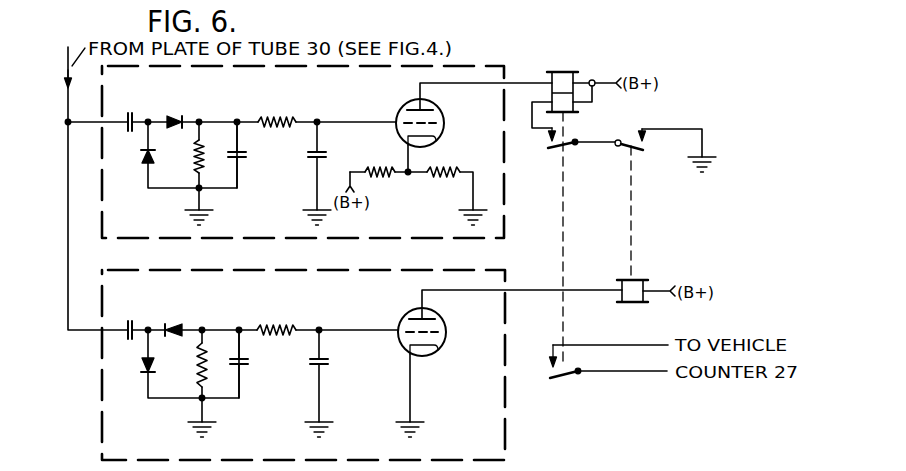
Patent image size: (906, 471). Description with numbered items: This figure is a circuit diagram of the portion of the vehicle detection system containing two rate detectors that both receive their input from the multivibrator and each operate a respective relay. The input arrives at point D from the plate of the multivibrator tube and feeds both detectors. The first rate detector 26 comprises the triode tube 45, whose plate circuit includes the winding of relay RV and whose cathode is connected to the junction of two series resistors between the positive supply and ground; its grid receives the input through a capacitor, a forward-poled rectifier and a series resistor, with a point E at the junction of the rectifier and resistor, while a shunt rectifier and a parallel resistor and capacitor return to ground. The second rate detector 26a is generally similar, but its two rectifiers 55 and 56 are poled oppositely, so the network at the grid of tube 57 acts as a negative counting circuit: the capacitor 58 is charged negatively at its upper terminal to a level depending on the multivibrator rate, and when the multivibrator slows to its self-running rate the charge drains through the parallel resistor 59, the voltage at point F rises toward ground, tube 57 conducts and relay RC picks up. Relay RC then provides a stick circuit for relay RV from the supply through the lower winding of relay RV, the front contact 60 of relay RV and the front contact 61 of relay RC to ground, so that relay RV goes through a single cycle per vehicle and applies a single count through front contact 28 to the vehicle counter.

The rate detector 26 is at (483, 65).
The second rate detector 26a is at (357, 268).
The triode tube 45 is at (445, 115).
The tube 57 is at (446, 324).
The rectifier 55 is at (173, 327).
The rectifier 56 is at (141, 367).
The capacitor 58 is at (245, 365).
The resistor 59 is at (197, 371).
The front contact of relay RV 60 is at (559, 148).
The front contact of relay RC 61 is at (618, 148).
The front contact 28 is at (572, 376).
The relay RV is at (558, 69).
The relay RC is at (640, 279).
The point D is at (66, 106).
The point E is at (213, 120).
The point F is at (213, 328).